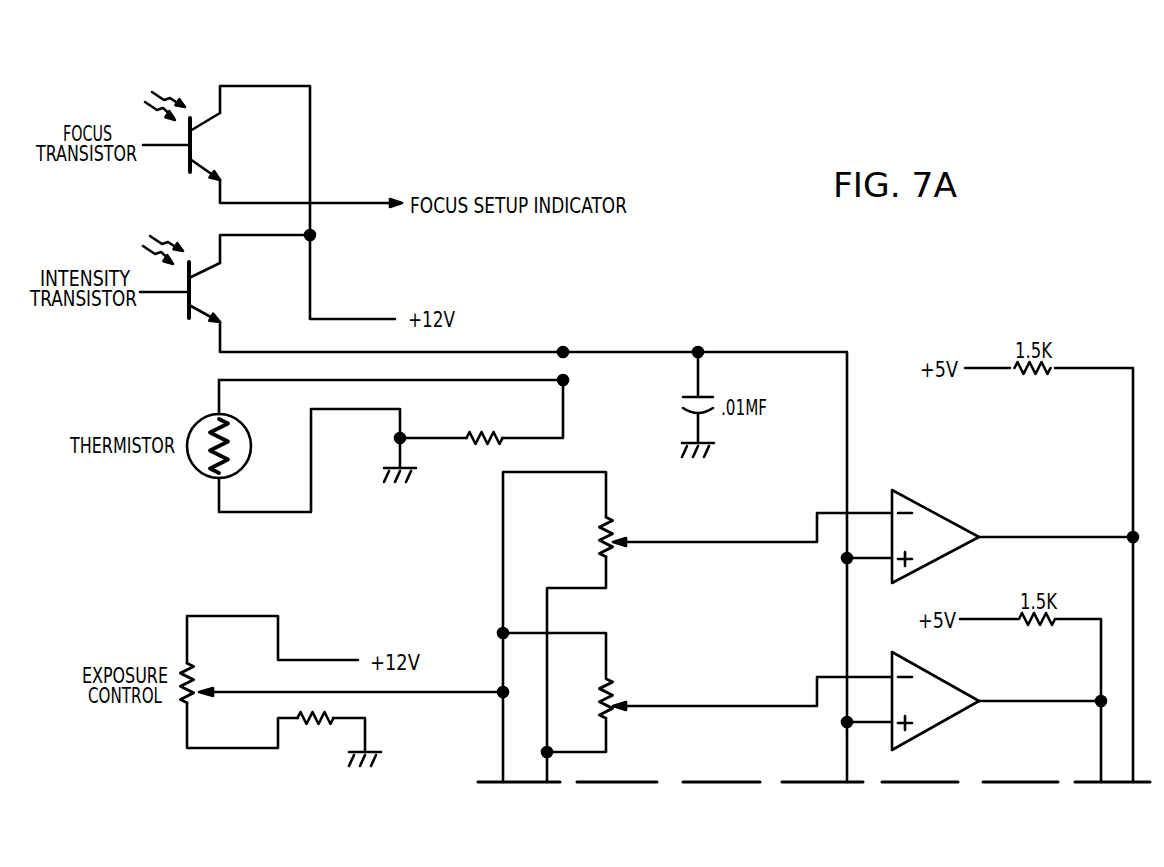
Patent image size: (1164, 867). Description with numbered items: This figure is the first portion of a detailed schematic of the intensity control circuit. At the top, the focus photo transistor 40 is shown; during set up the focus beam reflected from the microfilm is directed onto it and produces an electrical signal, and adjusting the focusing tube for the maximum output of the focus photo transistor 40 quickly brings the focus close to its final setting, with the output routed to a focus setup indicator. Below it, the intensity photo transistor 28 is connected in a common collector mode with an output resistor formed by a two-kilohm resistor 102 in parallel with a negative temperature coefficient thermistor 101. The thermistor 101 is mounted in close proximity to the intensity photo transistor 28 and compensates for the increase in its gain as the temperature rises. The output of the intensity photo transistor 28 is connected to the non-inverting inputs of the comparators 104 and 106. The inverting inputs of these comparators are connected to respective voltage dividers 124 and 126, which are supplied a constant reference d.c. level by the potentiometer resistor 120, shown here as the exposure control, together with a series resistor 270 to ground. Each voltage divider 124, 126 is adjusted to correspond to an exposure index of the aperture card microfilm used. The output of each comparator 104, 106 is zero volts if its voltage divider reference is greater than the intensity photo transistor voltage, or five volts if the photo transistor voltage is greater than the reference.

The focus photo transistor 40 is at (210, 145).
The intensity photo transistor 28 is at (206, 293).
The NTC thermistor 101 is at (238, 426).
The 2K resistor 102 is at (487, 447).
The voltage divider 124 is at (612, 523).
The voltage divider 126 is at (610, 686).
The potentiometer resistor 120 is at (196, 672).
The 270 ohm resistor 270 is at (316, 730).
The comparator 104 is at (945, 516).
The comparator 106 is at (948, 686).